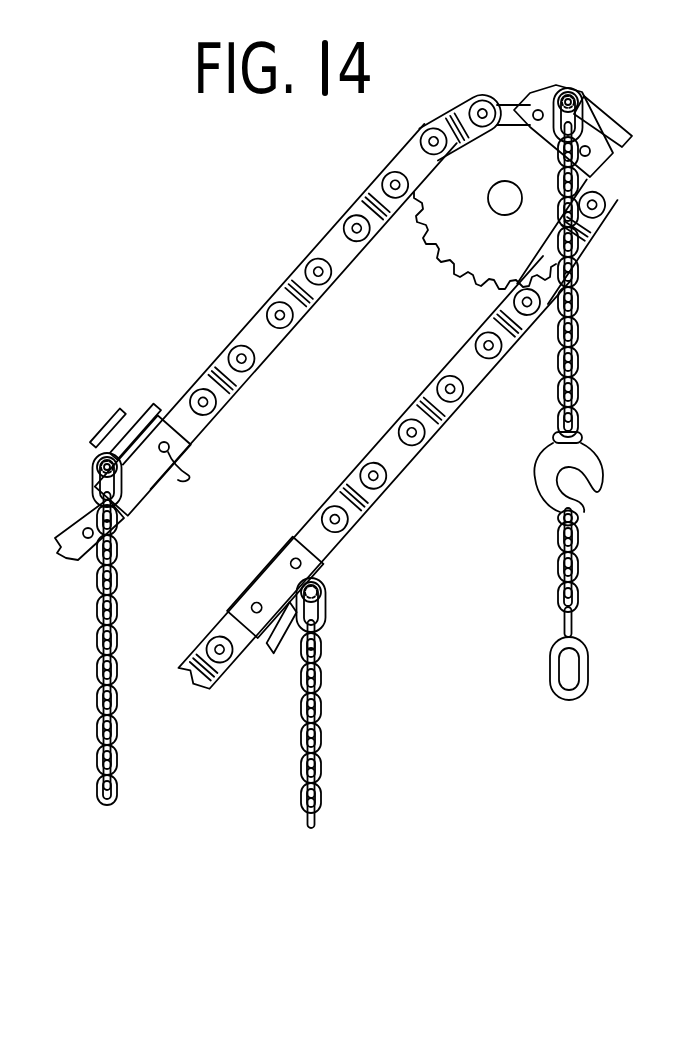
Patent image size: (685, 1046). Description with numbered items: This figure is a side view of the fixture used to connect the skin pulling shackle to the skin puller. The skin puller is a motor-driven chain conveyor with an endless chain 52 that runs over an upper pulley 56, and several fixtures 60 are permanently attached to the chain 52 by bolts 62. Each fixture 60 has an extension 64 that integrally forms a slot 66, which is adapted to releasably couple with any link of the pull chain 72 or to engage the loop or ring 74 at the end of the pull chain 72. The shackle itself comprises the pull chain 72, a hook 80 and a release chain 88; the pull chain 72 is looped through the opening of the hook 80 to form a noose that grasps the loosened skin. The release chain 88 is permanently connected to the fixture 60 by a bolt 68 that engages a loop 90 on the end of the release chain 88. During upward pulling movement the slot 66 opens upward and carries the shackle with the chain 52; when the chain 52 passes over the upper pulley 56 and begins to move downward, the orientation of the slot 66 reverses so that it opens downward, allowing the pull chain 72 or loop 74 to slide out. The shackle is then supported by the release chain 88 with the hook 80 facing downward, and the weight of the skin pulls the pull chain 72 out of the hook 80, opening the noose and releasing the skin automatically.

The endless chain 52 is at (412, 163).
The upper pulley 56 is at (488, 170).
The fixture 60 is at (122, 438).
The bolt 62 is at (150, 497).
The extension 64 is at (148, 418).
The slot 66 is at (157, 412).
The bolt 68 is at (100, 457).
The pull chain 72 is at (557, 561).
The loop 74 is at (550, 664).
The hook 80 is at (535, 485).
The release chain 88 is at (95, 632).
The loop 90 is at (93, 493).